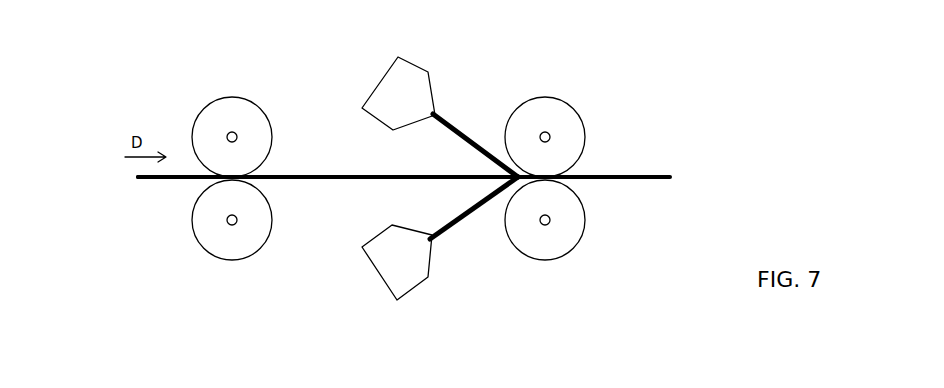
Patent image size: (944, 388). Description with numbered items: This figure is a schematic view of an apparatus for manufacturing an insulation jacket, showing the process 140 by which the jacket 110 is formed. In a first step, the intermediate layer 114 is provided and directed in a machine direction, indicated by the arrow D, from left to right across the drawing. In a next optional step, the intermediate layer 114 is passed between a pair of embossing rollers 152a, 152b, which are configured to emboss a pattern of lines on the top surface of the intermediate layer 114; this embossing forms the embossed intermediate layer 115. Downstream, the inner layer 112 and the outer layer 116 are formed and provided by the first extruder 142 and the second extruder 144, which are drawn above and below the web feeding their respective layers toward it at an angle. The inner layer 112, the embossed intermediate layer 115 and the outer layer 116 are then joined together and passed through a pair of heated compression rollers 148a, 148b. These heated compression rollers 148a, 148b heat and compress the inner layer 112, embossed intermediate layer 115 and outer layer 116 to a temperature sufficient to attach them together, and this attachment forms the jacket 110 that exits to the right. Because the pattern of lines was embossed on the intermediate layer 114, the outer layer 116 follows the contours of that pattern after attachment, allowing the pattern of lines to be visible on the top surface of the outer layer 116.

The process 140 is at (93, 78).
The jacket 110 is at (643, 174).
The intermediate layer 114 is at (148, 182).
The embossed intermediate layer 115 is at (325, 175).
The embossing roller 152a is at (237, 97).
The embossing roller 152b is at (238, 260).
The heated compression roller 148a is at (573, 105).
The heated compression roller 148b is at (577, 240).
The second extruder 144 is at (415, 66).
The first extruder 142 is at (417, 292).
The outer layer 116 is at (466, 134).
The inner layer 112 is at (457, 227).